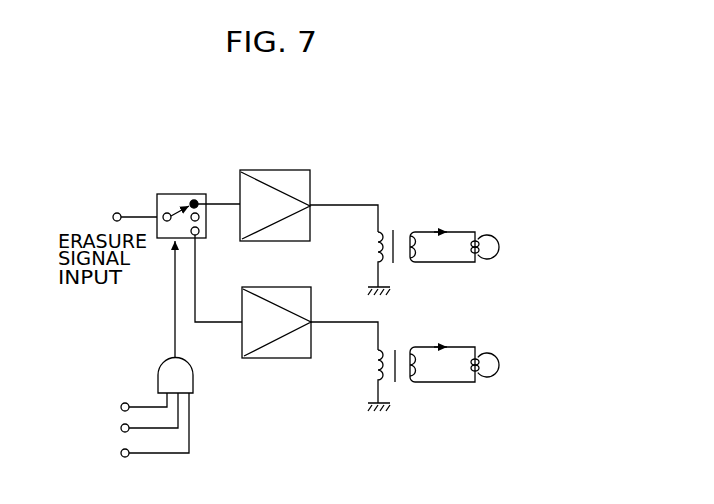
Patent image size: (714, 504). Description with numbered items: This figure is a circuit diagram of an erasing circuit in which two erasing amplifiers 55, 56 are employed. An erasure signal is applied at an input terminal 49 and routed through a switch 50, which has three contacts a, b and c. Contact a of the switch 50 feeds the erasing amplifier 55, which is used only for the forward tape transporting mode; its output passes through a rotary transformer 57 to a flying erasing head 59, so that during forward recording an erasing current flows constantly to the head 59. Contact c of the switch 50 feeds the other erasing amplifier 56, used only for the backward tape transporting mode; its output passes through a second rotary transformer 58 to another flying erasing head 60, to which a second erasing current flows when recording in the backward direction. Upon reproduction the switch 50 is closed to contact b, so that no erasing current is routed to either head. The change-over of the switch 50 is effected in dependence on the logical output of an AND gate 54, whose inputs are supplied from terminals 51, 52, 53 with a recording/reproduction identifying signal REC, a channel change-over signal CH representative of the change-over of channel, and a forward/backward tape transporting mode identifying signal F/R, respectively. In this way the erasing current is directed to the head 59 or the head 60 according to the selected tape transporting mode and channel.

The erasure signal input terminal 49 is at (115, 213).
The switch 50 is at (180, 194).
The REC input terminal 51 is at (121, 405).
The CH input terminal 52 is at (121, 428).
The F/R input terminal 53 is at (121, 453).
The AND gate 54 is at (193, 377).
The erasing amplifier 55 is at (280, 170).
The erasing amplifier 56 is at (277, 358).
The rotary transformer 57 is at (398, 230).
The rotary transformer 58 is at (400, 382).
The flying erasing head 59 is at (498, 250).
The flying erasing head 60 is at (496, 365).